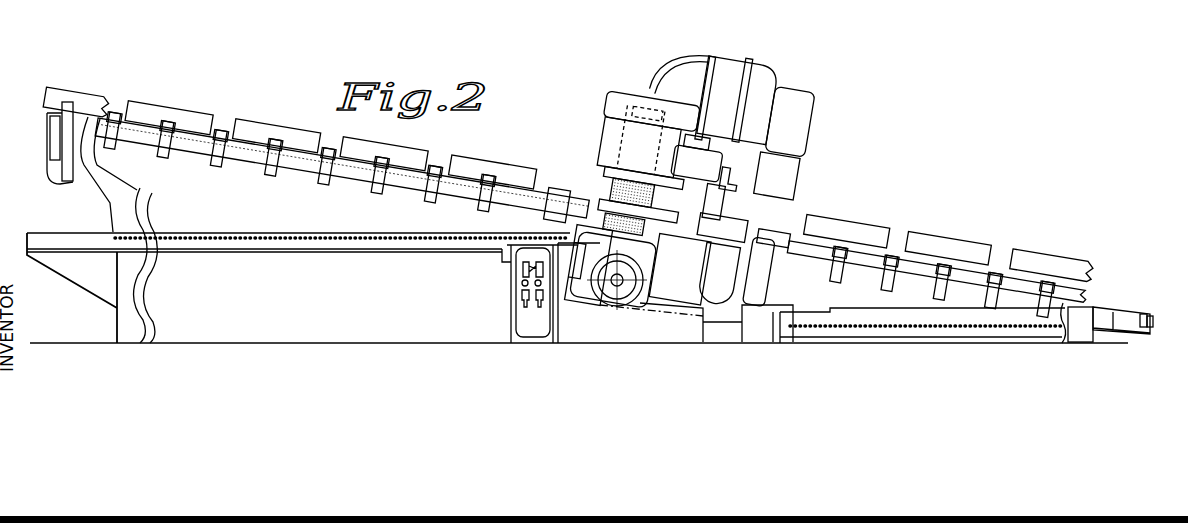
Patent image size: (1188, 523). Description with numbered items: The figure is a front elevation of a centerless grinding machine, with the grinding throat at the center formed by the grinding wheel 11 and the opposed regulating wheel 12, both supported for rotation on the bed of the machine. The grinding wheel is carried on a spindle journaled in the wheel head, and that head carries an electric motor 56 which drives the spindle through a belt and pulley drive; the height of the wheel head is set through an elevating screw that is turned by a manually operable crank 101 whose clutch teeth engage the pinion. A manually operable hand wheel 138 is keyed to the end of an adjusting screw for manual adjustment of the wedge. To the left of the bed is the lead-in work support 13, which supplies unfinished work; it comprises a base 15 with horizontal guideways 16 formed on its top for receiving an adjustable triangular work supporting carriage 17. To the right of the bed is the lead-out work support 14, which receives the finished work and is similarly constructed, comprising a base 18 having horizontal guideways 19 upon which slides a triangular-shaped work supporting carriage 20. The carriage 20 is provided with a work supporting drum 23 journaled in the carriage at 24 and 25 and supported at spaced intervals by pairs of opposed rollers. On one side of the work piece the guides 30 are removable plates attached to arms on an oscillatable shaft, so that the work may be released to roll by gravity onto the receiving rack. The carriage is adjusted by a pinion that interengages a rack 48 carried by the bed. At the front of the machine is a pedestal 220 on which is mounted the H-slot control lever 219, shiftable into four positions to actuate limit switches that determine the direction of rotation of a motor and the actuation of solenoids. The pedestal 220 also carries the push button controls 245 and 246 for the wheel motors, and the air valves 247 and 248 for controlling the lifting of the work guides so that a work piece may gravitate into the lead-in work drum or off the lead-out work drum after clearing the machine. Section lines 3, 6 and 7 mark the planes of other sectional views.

The section line 3- 3 is at (703, 372).
The section line 6- 6 is at (600, 372).
The section line 7- 7 is at (737, 373).
The grinding wheel 11 is at (603, 155).
The regulating wheel 12 is at (574, 262).
The lead-in work support 13 is at (110, 205).
The lead-out work support 14 is at (1085, 307).
The base 15 is at (483, 315).
The horizontal guideways 16 is at (46, 212).
The work supporting carriage 17 is at (117, 164).
The base 18 is at (947, 332).
The horizontal guideways 19 is at (1008, 330).
The work supporting carriage 20 is at (934, 246).
The work supporting drum 23 is at (868, 254).
The journal 24 is at (773, 268).
The journal 25 is at (1140, 312).
The guides 30 is at (916, 282).
The rack 48 is at (887, 330).
The electric motor 56 is at (723, 75).
The crank 101 is at (735, 169).
The hand wheel 138 is at (605, 303).
The H-slot control lever 219 is at (521, 271).
The pedestal 220 is at (531, 320).
The push button control 245 is at (521, 283).
The push button control 246 is at (541, 283).
The air valve 247 is at (521, 298).
The air valve 248 is at (546, 300).